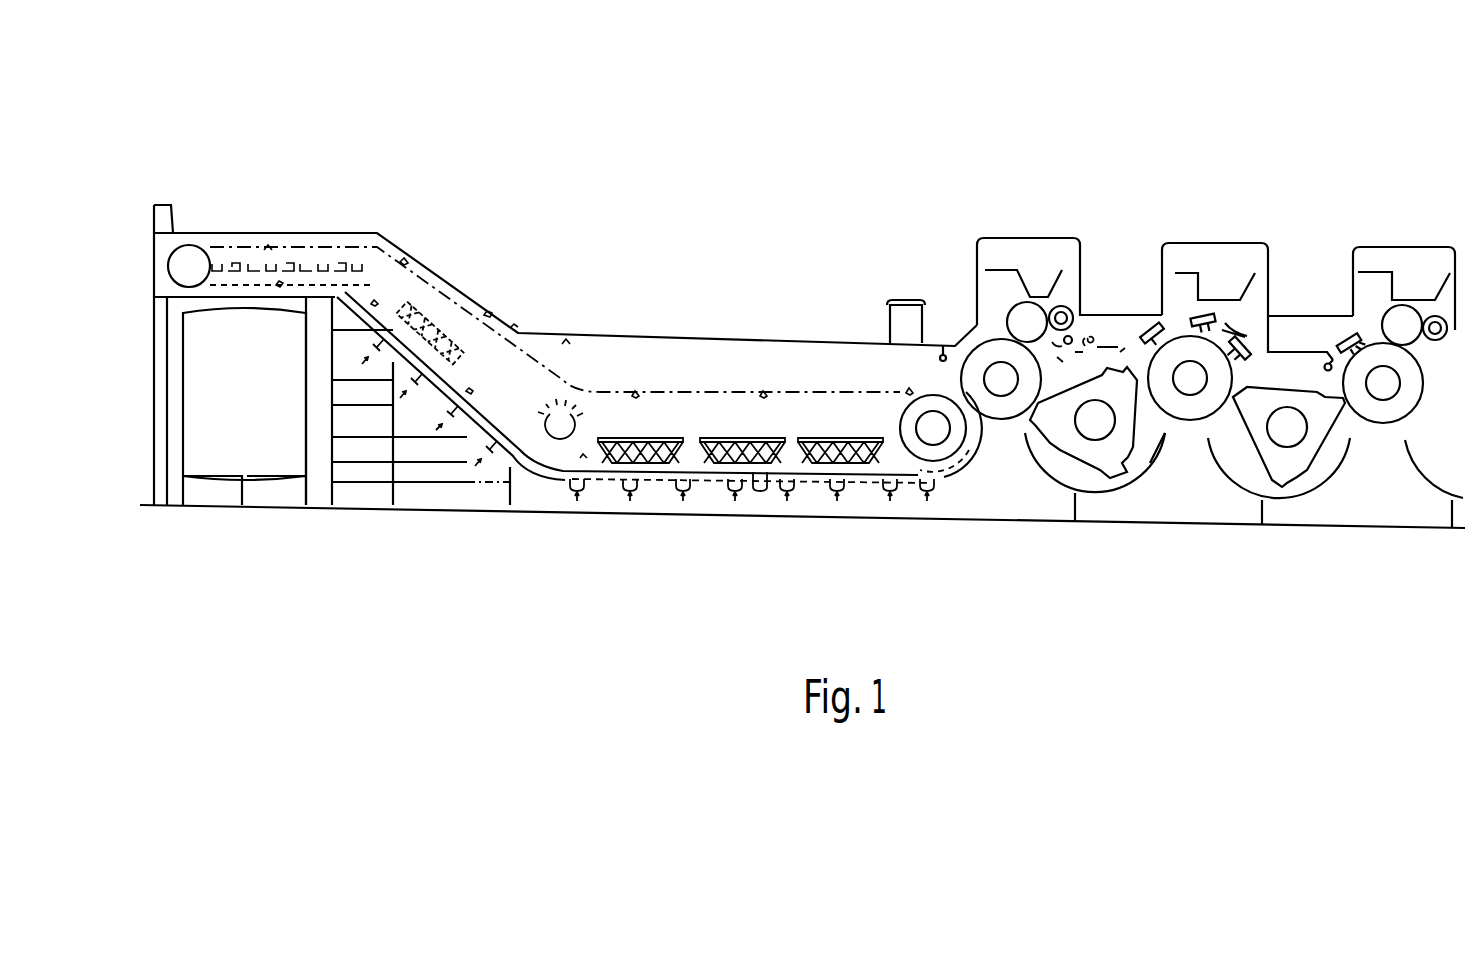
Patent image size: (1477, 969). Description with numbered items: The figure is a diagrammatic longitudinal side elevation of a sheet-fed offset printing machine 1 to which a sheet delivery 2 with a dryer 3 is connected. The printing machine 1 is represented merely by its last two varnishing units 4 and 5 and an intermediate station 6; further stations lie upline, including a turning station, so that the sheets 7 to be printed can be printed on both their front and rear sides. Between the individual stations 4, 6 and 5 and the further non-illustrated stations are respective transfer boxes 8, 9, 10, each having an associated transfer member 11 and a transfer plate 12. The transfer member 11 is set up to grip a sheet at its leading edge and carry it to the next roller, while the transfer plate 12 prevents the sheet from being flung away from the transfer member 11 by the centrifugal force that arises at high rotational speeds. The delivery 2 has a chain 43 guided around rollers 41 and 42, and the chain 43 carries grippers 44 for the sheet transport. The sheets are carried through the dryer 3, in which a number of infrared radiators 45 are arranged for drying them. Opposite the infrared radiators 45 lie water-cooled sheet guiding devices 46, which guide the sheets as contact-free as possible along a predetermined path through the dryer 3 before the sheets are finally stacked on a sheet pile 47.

The sheet-fed offset printing machine 1 is at (1157, 125).
The sheet delivery 2 is at (602, 152).
The dryer 3 is at (728, 374).
The varnishing unit 4 is at (1412, 213).
The varnishing unit 5 is at (1101, 266).
The intermediate station 6 is at (1283, 265).
The sheets 7 is at (1223, 337).
The transfer box 8 is at (1120, 490).
The transfer box 9 is at (1283, 502).
The transfer box 10 is at (1431, 494).
The transfer member 11 is at (1078, 455).
The transfer plate 12 is at (1037, 462).
The roller 41 is at (196, 247).
The roller 42 is at (931, 394).
The chain 43 is at (554, 373).
The grippers 44 is at (468, 397).
The infrared radiators 45 is at (784, 426).
The sheet guiding device 46 is at (609, 490).
The sheet pile 47 is at (230, 410).